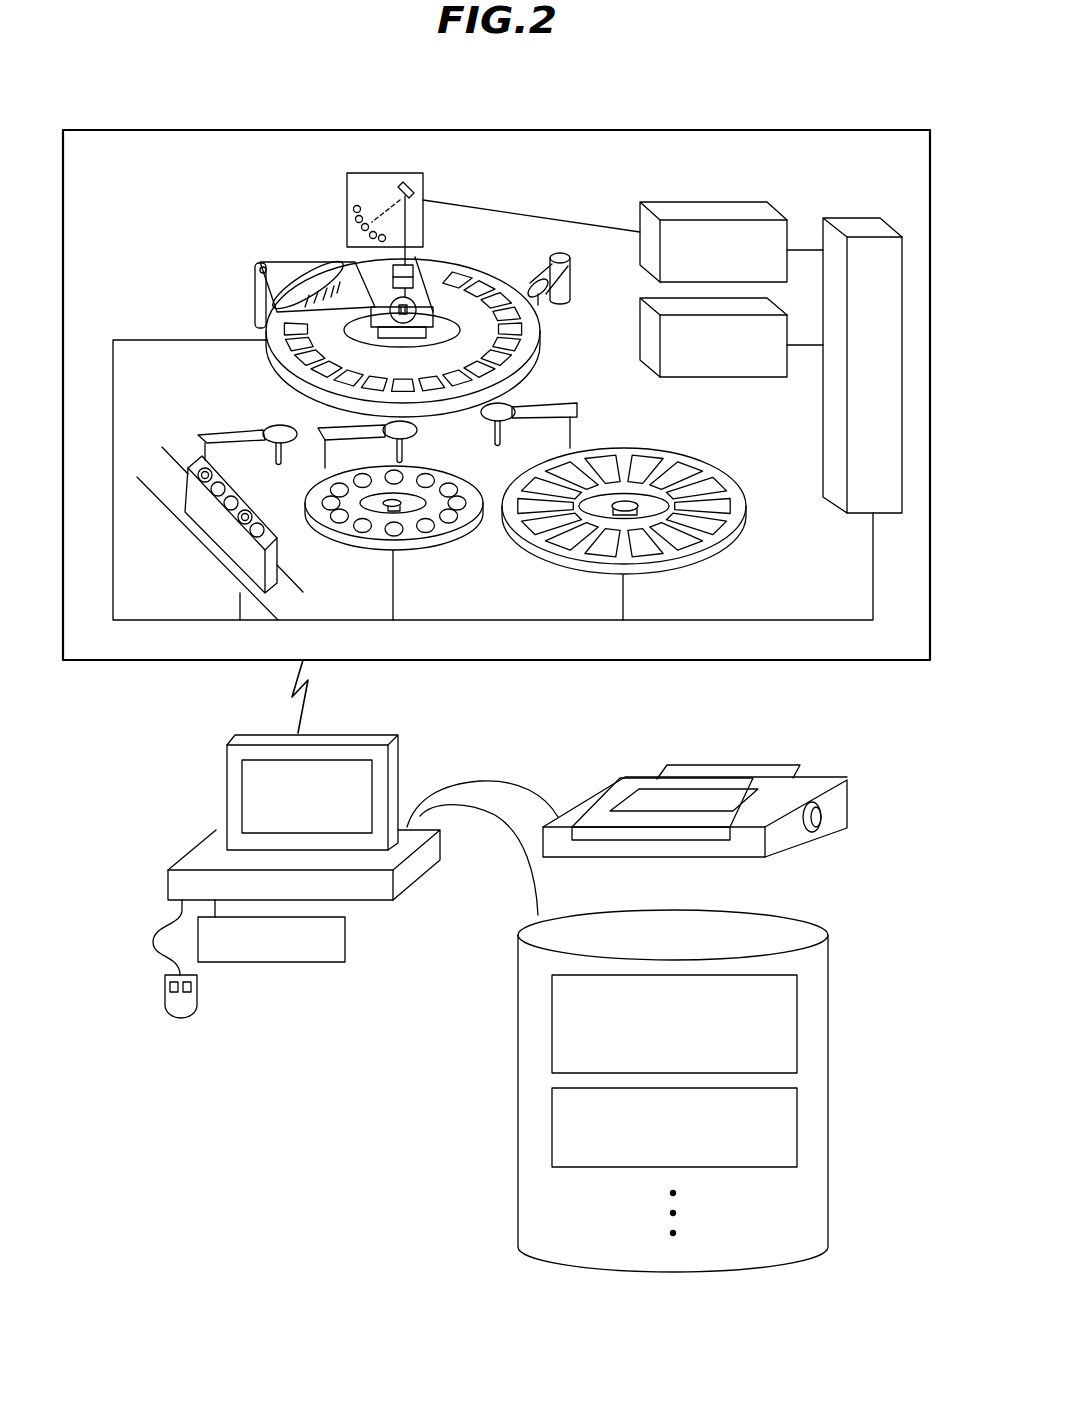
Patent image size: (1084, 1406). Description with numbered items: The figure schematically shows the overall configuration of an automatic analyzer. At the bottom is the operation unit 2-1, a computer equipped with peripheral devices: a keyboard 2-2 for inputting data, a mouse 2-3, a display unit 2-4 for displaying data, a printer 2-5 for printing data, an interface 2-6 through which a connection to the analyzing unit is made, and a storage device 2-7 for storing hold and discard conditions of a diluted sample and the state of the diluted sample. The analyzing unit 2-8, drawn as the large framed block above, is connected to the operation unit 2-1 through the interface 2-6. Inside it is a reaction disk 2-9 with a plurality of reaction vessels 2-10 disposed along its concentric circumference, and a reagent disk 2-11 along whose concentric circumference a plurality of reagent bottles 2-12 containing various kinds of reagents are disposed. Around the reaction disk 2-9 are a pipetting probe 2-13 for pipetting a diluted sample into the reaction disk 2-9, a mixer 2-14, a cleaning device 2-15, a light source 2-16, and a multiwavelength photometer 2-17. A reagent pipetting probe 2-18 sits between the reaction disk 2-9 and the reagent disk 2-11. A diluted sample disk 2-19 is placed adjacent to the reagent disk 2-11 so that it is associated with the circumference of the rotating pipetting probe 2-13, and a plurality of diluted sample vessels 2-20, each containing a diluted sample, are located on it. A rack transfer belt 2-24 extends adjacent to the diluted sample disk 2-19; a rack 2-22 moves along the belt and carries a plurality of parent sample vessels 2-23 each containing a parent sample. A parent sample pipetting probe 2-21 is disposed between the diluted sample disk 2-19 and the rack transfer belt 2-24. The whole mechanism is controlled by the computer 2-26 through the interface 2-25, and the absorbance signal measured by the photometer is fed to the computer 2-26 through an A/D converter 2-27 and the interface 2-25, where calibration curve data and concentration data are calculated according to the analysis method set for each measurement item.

The operation unit 2-1 is at (296, 817).
The keyboard 2-2 is at (312, 963).
The mouse 2-3 is at (181, 1018).
The display unit 2-4 is at (242, 813).
The printer 2-5 is at (847, 798).
The interface 2-6 is at (308, 695).
The storage device 2-7 is at (828, 962).
The analyzing unit 2-8 is at (97, 662).
The reaction disk 2-9 is at (466, 276).
The reaction vessel 2-10 is at (430, 299).
The reagent disk 2-11 is at (652, 534).
The reagent bottle 2-12 is at (641, 549).
The pipetting probe 2-13 is at (327, 428).
The mixer 2-14 is at (562, 281).
The cleaning device 2-15 is at (260, 290).
The light source 2-16 is at (421, 295).
The multiwavelength photometer 2-17 is at (347, 201).
The reagent pipetting probe 2-18 is at (565, 407).
The diluted sample disk 2-19 is at (394, 529).
The diluted sample vessel 2-20 is at (458, 497).
The parent sample pipetting probe 2-21 is at (270, 422).
The rack 2-22 is at (253, 538).
The parent sample vessel 2-23 is at (238, 527).
The rack transfer belt 2-24 is at (162, 490).
The interface 2-25 is at (850, 521).
The computer 2-26 is at (738, 379).
The A/D converter 2-27 is at (742, 201).